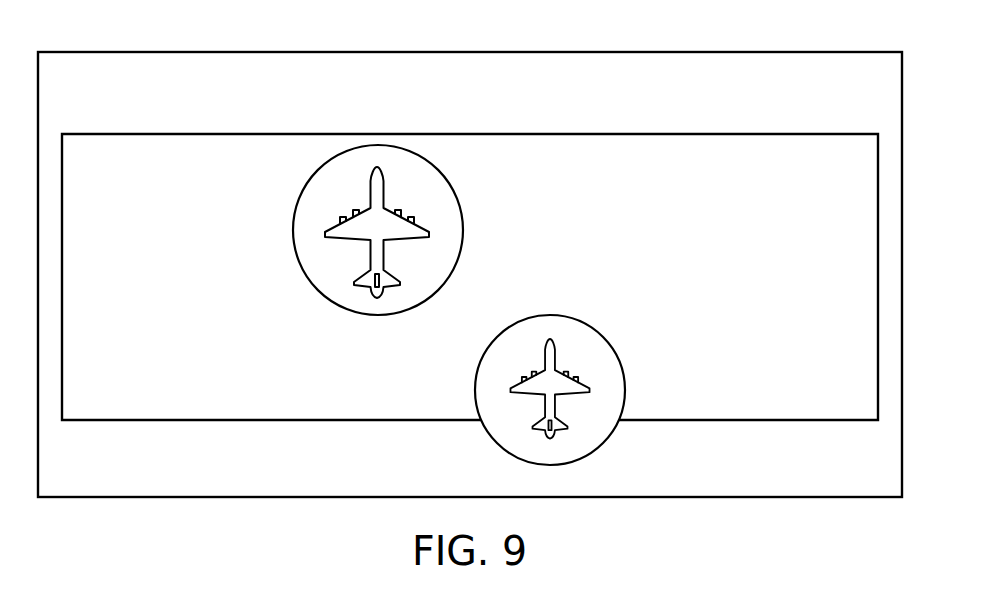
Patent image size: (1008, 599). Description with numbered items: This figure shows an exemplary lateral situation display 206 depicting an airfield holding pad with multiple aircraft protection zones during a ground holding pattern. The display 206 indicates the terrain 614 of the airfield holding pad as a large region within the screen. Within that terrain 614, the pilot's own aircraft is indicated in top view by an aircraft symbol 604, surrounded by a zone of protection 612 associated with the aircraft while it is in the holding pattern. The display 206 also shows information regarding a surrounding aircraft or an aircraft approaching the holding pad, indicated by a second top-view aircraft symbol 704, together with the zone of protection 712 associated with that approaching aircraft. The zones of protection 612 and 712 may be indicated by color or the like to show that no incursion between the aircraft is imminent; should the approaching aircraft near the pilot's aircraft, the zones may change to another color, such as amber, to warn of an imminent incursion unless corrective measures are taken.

The lateral situation display 206 is at (857, 52).
The terrain 614 is at (777, 134).
The zone of protection 612 is at (302, 191).
The aircraft symbol 604 is at (380, 168).
The zone of protection 712 is at (605, 442).
The aircraft symbol 704 is at (548, 408).